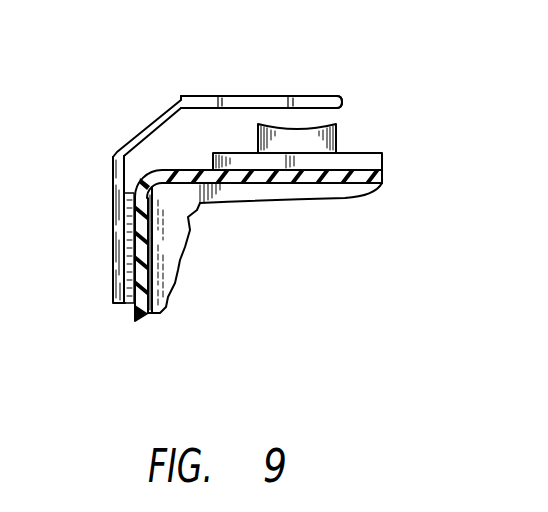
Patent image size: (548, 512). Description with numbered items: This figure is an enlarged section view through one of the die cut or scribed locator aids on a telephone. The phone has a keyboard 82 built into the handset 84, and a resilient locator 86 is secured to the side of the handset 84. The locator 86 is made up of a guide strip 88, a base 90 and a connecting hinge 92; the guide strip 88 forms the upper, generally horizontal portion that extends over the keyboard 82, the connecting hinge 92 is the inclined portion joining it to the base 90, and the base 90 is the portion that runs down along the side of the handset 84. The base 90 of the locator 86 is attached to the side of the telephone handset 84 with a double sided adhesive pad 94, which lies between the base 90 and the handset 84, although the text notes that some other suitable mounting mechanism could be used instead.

The keyboard 82 is at (347, 190).
The handset 84 is at (133, 310).
The resilient locator 86 is at (350, 96).
The guide strip 88 is at (233, 95).
The base 90 is at (112, 235).
The connecting hinge 92 is at (157, 128).
The double sided adhesive pad 94 is at (130, 268).